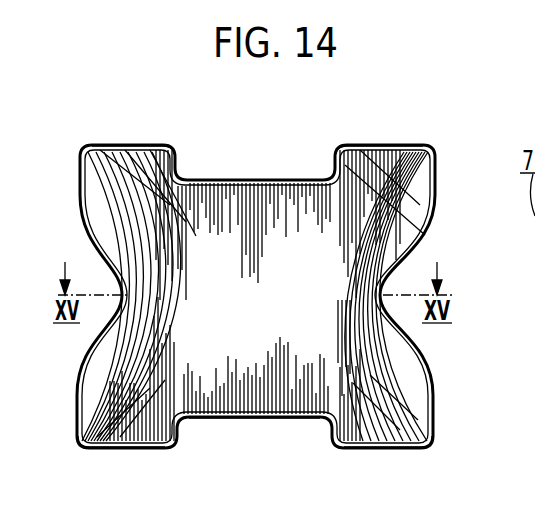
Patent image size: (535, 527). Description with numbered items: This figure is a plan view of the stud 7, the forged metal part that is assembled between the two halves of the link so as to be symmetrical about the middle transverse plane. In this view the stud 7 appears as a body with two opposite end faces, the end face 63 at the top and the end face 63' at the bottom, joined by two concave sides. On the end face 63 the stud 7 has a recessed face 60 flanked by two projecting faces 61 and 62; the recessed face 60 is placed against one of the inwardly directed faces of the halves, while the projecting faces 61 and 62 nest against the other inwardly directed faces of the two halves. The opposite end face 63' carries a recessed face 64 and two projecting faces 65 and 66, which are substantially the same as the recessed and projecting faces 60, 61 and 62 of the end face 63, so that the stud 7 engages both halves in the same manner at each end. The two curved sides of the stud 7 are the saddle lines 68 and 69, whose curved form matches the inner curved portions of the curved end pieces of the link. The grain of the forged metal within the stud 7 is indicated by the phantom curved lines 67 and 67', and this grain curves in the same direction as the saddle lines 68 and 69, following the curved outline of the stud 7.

The stud 7 is at (397, 340).
The recessed face 60 is at (268, 178).
The projecting face 61 is at (118, 143).
The projecting face 62 is at (370, 143).
The end face 63 is at (194, 130).
The end face 63' is at (200, 445).
The recessed face 64 is at (278, 419).
The projecting face 65 is at (125, 448).
The projecting face 66 is at (380, 447).
The phantom curved line 67 is at (354, 295).
The phantom curved line 67' is at (162, 295).
The saddle line 68 is at (399, 264).
The saddle line 69 is at (118, 248).